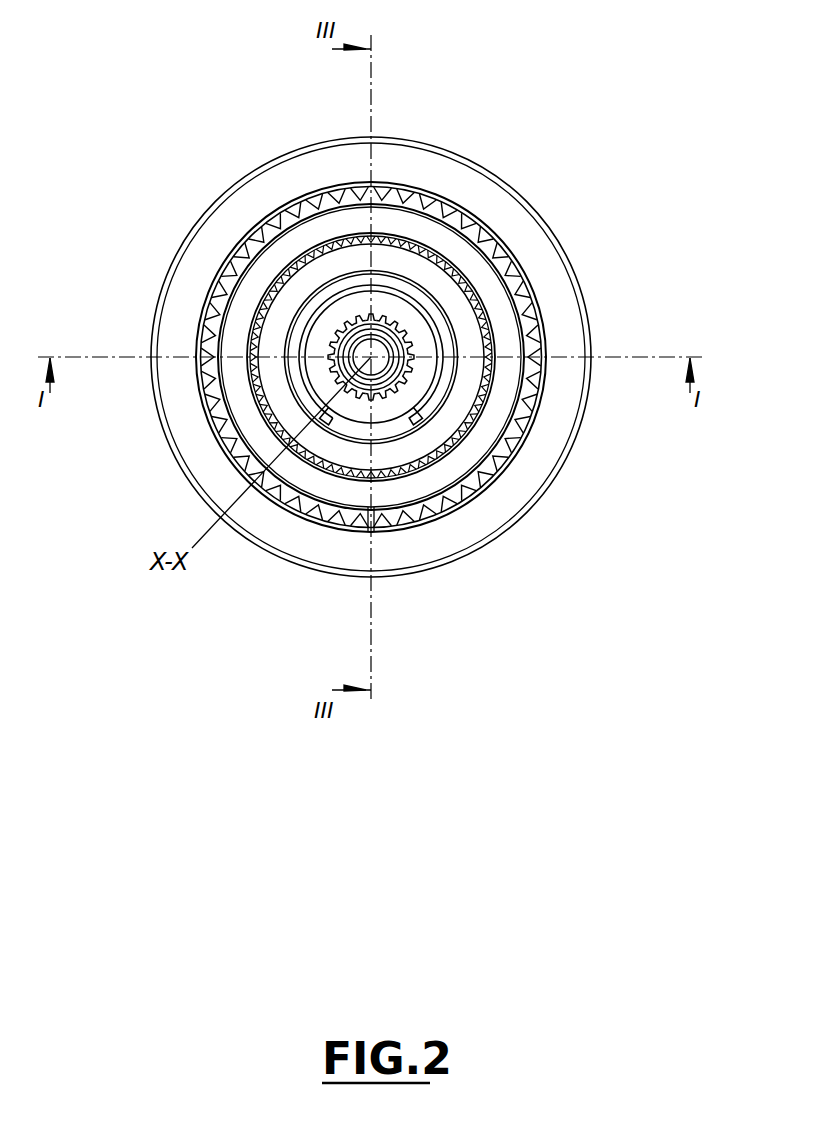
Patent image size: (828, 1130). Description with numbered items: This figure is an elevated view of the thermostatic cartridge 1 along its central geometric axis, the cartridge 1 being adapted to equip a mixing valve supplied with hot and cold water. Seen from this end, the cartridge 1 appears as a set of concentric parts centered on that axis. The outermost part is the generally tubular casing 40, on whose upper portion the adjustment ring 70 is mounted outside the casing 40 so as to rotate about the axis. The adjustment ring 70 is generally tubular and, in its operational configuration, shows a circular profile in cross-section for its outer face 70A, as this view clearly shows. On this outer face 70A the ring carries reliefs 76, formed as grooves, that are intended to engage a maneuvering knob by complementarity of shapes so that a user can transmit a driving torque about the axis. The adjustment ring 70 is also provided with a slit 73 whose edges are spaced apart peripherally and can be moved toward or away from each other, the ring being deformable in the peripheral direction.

The thermostatic cartridge 1 is at (185, 221).
The casing 40 is at (154, 429).
The adjustment ring 70 is at (449, 201).
The outer face 70A is at (534, 271).
The reliefs 76 is at (503, 236).
The slit 73 is at (368, 532).